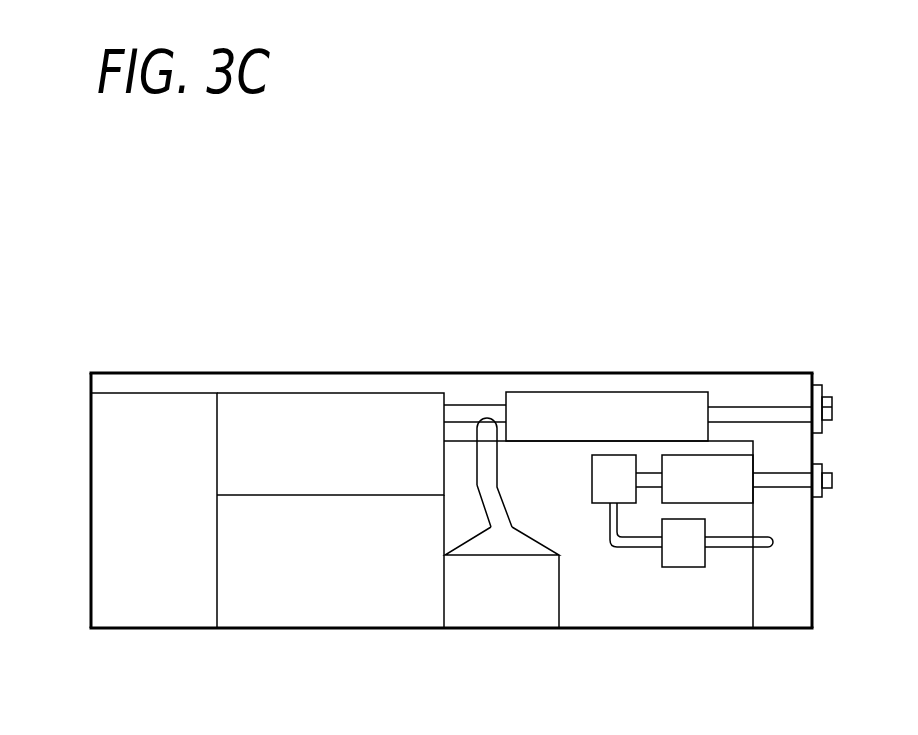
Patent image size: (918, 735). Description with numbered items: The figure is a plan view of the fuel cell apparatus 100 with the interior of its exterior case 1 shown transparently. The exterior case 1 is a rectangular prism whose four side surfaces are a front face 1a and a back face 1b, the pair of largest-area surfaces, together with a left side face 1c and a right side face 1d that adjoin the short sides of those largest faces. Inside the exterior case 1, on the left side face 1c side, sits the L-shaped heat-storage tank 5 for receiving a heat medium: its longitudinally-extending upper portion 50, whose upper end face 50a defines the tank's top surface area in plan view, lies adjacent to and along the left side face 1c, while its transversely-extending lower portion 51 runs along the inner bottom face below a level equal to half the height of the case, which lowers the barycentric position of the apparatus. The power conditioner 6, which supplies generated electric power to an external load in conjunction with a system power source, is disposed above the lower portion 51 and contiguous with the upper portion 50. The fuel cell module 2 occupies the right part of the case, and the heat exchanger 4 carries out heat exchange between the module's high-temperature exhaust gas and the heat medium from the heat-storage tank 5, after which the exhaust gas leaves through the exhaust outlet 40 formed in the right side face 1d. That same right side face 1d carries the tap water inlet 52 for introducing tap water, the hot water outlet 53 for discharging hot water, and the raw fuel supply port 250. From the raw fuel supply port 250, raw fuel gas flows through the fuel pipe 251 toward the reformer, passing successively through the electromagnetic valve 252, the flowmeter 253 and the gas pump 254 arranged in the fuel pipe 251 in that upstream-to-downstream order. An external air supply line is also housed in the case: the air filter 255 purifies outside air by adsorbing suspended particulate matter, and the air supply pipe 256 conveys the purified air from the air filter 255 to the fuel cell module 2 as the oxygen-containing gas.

The fuel cell apparatus 100 is at (130, 215).
The exterior case 1 is at (135, 385).
The front face 1a is at (233, 628).
The back face 1b is at (262, 372).
The left side face 1c is at (90, 418).
The right side face 1d is at (813, 568).
The fuel cell module 2 is at (733, 590).
The heat exchanger 4 is at (543, 407).
The heat-storage tank 5 is at (110, 483).
The power conditioner 6 is at (333, 428).
The exhaust outlet 40 is at (815, 410).
The upper portion 50 is at (154, 598).
The upper end face 50a is at (112, 556).
The lower portion 51 is at (328, 583).
The tap water inlet 52 is at (826, 412).
The hot water outlet 53 is at (830, 420).
The raw fuel supply port 250 is at (828, 477).
The fuel pipe 251 is at (620, 540).
The electromagnetic valve 252 is at (691, 475).
The flowmeter 253 is at (612, 470).
The gas pump 254 is at (683, 557).
The air filter 255 is at (480, 605).
The air supply pipe 256 is at (486, 437).